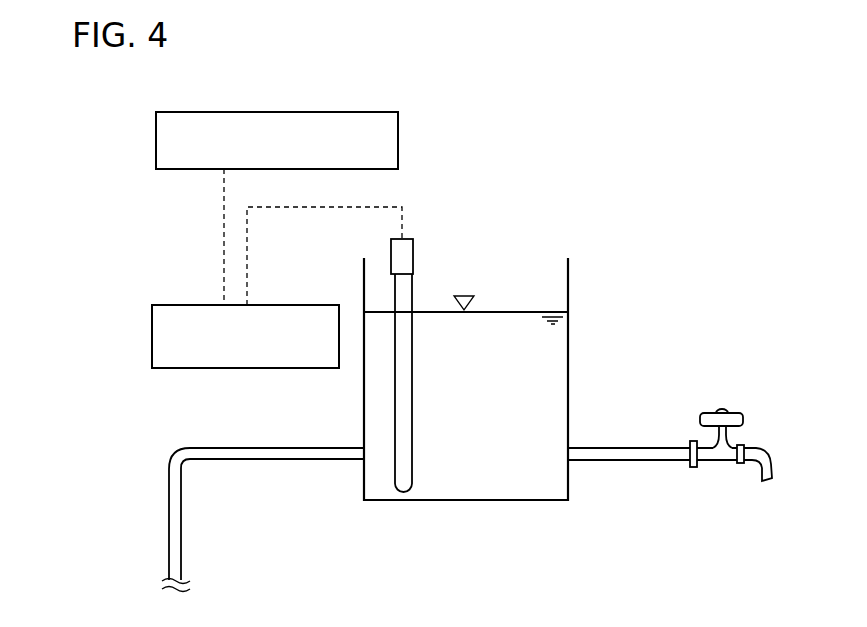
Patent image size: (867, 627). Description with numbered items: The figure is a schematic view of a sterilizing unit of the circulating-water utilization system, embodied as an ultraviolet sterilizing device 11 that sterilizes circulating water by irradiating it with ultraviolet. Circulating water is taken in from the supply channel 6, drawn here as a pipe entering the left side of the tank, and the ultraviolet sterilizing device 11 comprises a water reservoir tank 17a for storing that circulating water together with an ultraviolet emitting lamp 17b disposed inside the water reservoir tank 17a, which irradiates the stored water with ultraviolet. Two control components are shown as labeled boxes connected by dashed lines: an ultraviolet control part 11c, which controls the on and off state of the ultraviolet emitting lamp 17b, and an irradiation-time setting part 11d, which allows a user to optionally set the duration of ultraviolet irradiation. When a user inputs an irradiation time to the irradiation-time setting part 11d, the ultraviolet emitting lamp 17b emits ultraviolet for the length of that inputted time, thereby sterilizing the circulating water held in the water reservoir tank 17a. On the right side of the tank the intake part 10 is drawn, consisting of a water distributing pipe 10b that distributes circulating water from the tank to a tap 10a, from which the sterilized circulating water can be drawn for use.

The supply channel 6 is at (182, 520).
The intake part 10 is at (754, 360).
The tap 10a is at (723, 410).
The water distributing pipe 10b is at (628, 448).
The ultraviolet sterilizing device 11 is at (549, 120).
The ultraviolet control part 11c is at (192, 305).
The irradiation-time setting part 11d is at (398, 137).
The water reservoir tank 17a is at (568, 275).
The ultraviolet emitting lamp 17b is at (412, 295).